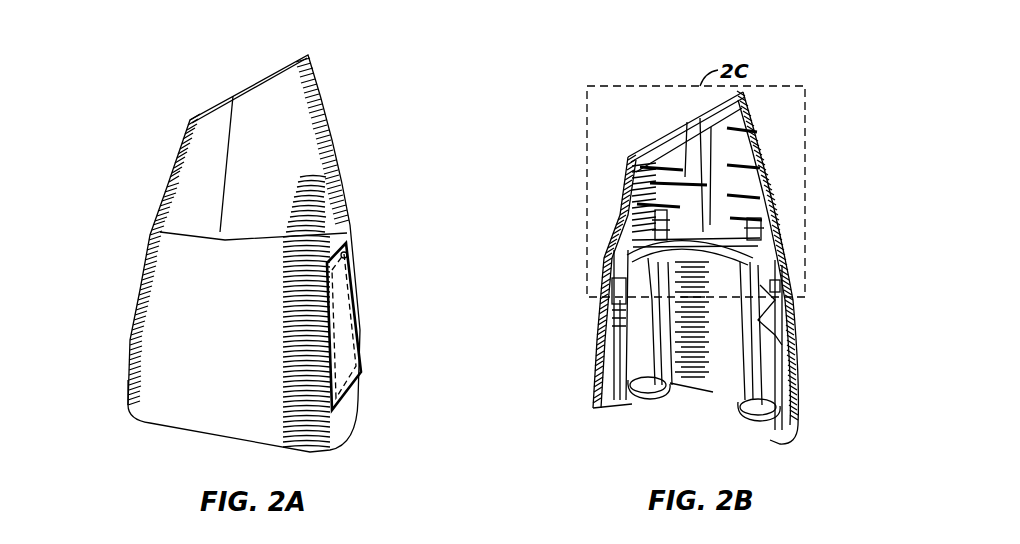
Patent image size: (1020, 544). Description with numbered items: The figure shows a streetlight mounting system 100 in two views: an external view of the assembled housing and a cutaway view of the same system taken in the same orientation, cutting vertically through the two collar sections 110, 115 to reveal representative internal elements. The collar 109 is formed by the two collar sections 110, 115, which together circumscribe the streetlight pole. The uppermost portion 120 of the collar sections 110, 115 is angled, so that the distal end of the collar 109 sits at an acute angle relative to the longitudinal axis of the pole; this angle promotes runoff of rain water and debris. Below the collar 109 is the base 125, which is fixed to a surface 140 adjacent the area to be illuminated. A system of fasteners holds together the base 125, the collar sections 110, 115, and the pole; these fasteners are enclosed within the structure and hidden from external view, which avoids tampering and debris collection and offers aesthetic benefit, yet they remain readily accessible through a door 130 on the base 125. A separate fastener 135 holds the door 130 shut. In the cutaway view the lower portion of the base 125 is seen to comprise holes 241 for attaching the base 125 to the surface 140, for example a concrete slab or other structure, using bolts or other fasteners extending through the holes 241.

In FIG. 2A, the streetlight mounting system 100 is at (140, 72).
In FIG. 2B, the streetlight mounting system 100 is at (575, 70).
In FIG. 2A, the collar 109 is at (330, 108).
In FIG. 2A, the collar section 110 is at (183, 168).
In FIG. 2B, the collar section 110 is at (620, 207).
In FIG. 2A, the collar section 115 is at (323, 180).
In FIG. 2B, the collar section 115 is at (777, 220).
In FIG. 2A, the uppermost portion 120 is at (242, 85).
In FIG. 2B, the uppermost portion 120 is at (663, 143).
In FIG. 2A, the base 125 is at (148, 310).
In FIG. 2B, the base 125 is at (595, 337).
In FIG. 2A, the door 130 is at (349, 310).
In FIG. 2B, the door 130 is at (795, 348).
In FIG. 2A, the fastener 135 is at (348, 254).
In FIG. 2B, the surface 140 is at (709, 469).
In FIG. 2B, the holes 241 is at (655, 395).